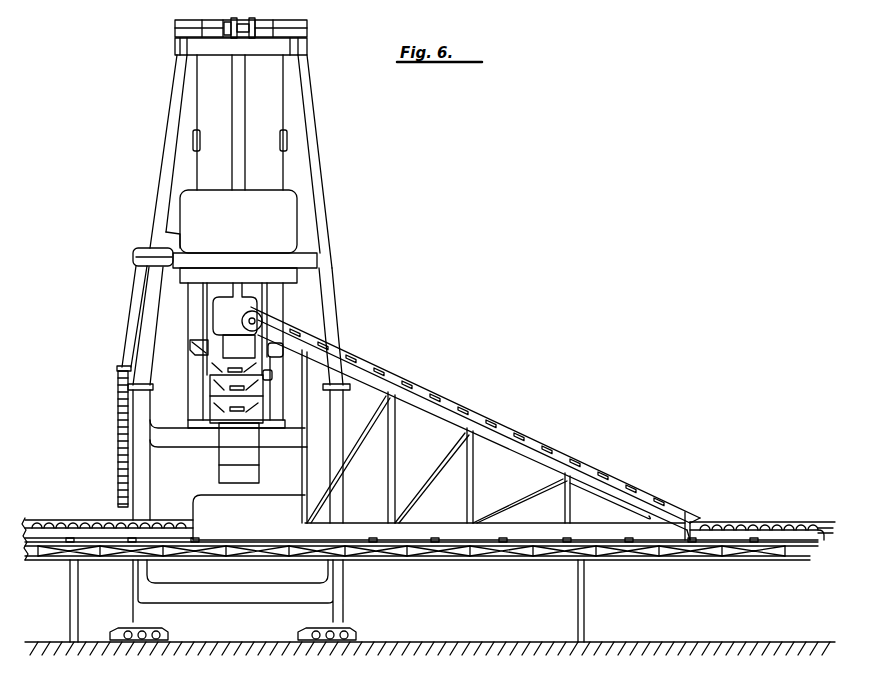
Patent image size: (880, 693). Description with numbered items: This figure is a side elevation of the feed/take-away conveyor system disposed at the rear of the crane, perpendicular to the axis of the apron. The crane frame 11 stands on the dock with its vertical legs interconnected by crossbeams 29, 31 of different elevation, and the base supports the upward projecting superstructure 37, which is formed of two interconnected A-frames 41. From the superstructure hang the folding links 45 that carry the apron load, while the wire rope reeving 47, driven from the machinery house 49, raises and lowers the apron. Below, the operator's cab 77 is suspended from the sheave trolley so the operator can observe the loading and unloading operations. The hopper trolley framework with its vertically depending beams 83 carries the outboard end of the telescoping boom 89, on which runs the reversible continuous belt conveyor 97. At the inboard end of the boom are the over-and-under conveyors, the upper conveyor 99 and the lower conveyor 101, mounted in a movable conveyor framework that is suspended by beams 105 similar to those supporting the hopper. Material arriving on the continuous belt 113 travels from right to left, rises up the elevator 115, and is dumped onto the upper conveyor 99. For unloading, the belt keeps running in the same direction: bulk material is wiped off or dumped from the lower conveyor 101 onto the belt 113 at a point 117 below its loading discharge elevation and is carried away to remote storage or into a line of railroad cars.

The crane frame 11 is at (104, 469).
The crossbeam 29 is at (166, 596).
The crossbeam 31 is at (167, 443).
The superstructure 37 is at (145, 131).
The A-frames 41 is at (308, 117).
The folding links 45 is at (198, 101).
The wire rope reeving 47 is at (246, 104).
The machinery house 49 is at (245, 230).
The operator's cab 77 is at (216, 304).
The vertically depending beams 83 is at (190, 322).
The telescoping boom 89 is at (267, 371).
The reversible continuous belt conveyor 97 is at (212, 390).
The upper over-and-under conveyor 99 is at (195, 358).
The lower over-and-under conveyor 101 is at (213, 405).
The suspending beams 105 is at (213, 368).
The continuous belt 113 is at (86, 518).
The elevator 115 is at (475, 406).
The discharge point 117 is at (219, 487).